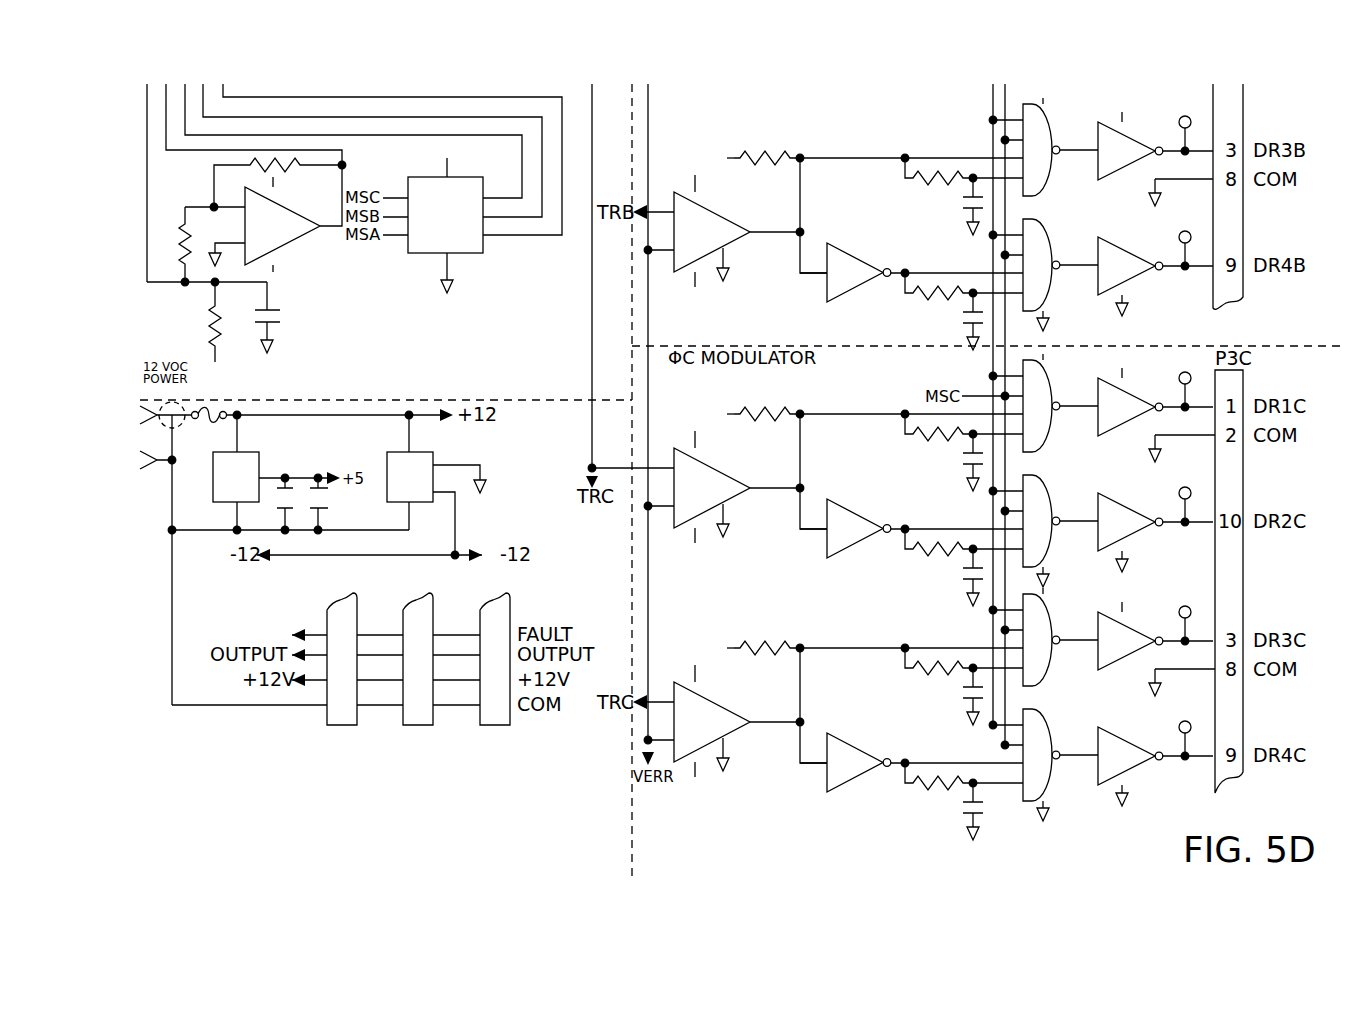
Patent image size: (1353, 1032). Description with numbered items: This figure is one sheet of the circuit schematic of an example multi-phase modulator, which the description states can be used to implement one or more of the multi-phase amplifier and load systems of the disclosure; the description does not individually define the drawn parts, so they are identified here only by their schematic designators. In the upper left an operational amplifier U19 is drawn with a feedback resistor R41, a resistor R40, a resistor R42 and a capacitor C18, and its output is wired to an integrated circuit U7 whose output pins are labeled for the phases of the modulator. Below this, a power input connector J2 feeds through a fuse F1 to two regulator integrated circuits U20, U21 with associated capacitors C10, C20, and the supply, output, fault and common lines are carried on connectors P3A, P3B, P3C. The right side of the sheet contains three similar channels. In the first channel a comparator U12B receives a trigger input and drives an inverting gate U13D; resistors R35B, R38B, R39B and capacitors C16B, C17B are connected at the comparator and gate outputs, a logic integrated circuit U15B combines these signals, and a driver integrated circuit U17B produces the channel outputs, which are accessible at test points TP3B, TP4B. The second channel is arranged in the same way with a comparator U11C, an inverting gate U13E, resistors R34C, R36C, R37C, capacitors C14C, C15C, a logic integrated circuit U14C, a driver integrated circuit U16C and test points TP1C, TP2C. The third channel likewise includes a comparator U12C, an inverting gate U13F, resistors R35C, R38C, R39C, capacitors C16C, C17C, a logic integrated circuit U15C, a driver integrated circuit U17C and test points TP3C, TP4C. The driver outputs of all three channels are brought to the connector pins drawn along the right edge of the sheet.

The operational amplifier 412 U19 is at (277, 222).
The feedback resistor 10K R41 is at (267, 178).
The resistor 10K R40 is at (184, 244).
The resistor 10K R42 is at (204, 329).
The capacitor C18 is at (274, 317).
The analog multiplexer U7 is at (465, 217).
The 12 VDC power input connector J2 is at (166, 427).
The fuse F1 is at (208, 424).
The voltage regulator 79L05 U20 is at (236, 472).
The voltage regulator U21 is at (436, 485).
The capacitor .10 C10 is at (296, 502).
The capacitor 10 C20 is at (335, 502).
The connector P3A is at (345, 647).
The connector P3B is at (420, 647).
The connector P3C is at (496, 647).
The comparator 311 U12B is at (724, 233).
The resistor 2.49K R35B is at (755, 162).
The resistor 2.49K R38B is at (941, 180).
The capacitor 33 C16B is at (930, 204).
The inverter U13D is at (911, 272).
The resistor 4.99K R39B is at (941, 296).
The capacitor 33 C17B is at (930, 319).
The NAND gate U15B is at (1043, 207).
The driver 426 U17B is at (1150, 203).
The test point TP3B is at (1183, 124).
The test point TP4B is at (1183, 239).
The comparator 311 U11C is at (724, 489).
The resistor 2.49K R34C is at (755, 418).
The resistor 2.49K R36C is at (941, 436).
The capacitor 33 C14C is at (930, 460).
The inverter U13E is at (911, 528).
The resistor 4.99K R37C is at (941, 552).
The capacitor 33 C15C is at (930, 575).
The NAND gate U14C is at (1043, 463).
The driver 426 U16C is at (1150, 459).
The test point TP1C is at (1183, 380).
The test point TP2C is at (1183, 495).
The comparator 311 U12C is at (724, 723).
The resistor 2.49K R35C is at (755, 652).
The resistor 2.49K R38C is at (941, 670).
The capacitor 33 C16C is at (930, 694).
The inverter U13F is at (911, 762).
The resistor 4.99K R39C is at (941, 786).
The capacitor 33 C17C is at (930, 809).
The NAND gate U15C is at (1043, 697).
The driver 426 U17C is at (1150, 693).
The test point TP3C is at (1183, 614).
The test point TP4C is at (1183, 729).